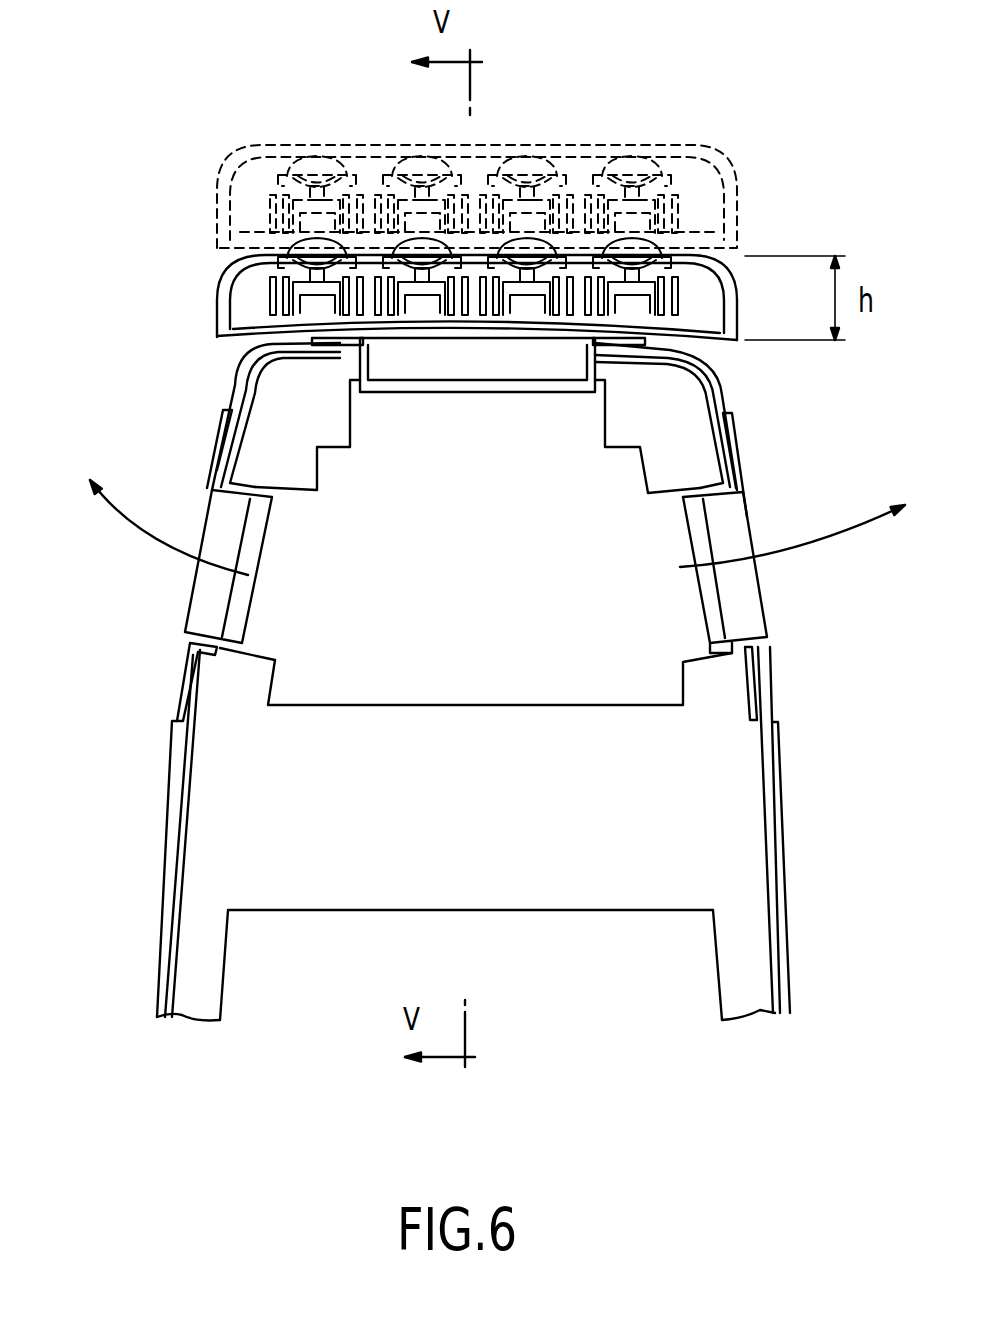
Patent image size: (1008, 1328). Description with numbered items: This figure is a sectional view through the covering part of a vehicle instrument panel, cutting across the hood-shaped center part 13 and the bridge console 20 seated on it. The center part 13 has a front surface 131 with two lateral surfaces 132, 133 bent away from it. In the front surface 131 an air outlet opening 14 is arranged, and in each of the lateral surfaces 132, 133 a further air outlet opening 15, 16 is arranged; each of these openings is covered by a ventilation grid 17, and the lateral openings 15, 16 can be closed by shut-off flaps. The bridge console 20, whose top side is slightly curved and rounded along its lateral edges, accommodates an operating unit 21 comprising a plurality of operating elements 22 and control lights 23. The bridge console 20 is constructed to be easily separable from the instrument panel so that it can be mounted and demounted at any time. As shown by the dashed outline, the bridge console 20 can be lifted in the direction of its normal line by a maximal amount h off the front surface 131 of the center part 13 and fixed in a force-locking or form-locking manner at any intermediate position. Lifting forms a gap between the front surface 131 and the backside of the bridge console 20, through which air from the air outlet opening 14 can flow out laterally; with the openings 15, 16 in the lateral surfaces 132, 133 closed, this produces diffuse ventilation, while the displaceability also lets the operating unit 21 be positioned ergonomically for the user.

The center part 13 is at (477, 679).
The front surface 131 is at (292, 353).
The lateral surface 132 is at (170, 800).
The lateral surface 133 is at (790, 848).
The air outlet opening 14 is at (450, 380).
The air outlet opening 15 is at (240, 605).
The air outlet opening 16 is at (712, 598).
The ventilation grid 17 is at (337, 350).
The bridge console 20 is at (471, 220).
The operating unit 21 is at (373, 147).
The operating elements 22 is at (317, 248).
The control lights 23 is at (537, 247).